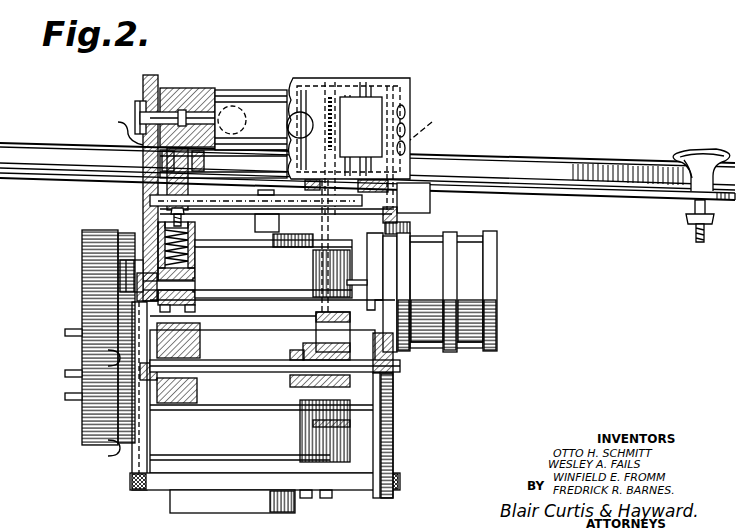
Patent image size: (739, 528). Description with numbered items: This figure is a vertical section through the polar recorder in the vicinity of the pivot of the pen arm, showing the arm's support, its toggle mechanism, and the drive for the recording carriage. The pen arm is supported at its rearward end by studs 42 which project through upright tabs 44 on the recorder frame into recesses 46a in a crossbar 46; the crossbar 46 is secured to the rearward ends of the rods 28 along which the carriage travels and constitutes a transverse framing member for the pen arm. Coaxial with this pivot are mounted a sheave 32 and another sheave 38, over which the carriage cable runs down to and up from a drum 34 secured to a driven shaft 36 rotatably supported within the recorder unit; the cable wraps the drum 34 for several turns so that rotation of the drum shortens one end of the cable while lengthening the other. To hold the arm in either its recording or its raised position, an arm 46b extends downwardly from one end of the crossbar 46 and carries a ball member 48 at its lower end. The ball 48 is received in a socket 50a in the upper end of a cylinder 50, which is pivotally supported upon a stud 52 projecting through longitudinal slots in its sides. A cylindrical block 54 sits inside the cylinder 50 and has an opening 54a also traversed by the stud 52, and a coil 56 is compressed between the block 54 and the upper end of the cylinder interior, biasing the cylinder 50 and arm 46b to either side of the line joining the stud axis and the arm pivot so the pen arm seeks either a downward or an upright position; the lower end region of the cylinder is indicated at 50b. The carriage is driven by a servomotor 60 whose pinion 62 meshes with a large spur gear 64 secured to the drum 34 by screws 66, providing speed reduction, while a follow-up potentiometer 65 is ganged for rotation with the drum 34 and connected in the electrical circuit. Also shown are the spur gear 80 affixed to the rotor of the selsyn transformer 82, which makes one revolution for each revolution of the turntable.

The rods 28 is at (286, 116).
The sheave 32 is at (352, 80).
The drum 34 is at (316, 318).
The driven shaft 36 is at (240, 362).
The sheave 38 is at (331, 80).
The studs 42 is at (165, 110).
The upright tabs 44 is at (272, 129).
The crossbar 46 is at (264, 92).
The recesses 46a is at (196, 100).
The arm 46b is at (172, 183).
The ball member 48 is at (184, 215).
The cylinder 50 is at (190, 234).
The socket 50a is at (166, 225).
The spring seat 50b is at (195, 297).
The stud 52 is at (204, 285).
The cylindrical block 54 is at (190, 306).
The opening 54a is at (198, 278).
The coil 56 is at (190, 268).
The servomotor 60 is at (496, 282).
The pinion 62 is at (362, 280).
The spur gear 64 is at (350, 452).
The follow-up potentiometer 65 is at (106, 446).
The screws 66 is at (358, 336).
The spur gear 80 is at (350, 206).
The selsyn transformer 82 is at (275, 273).